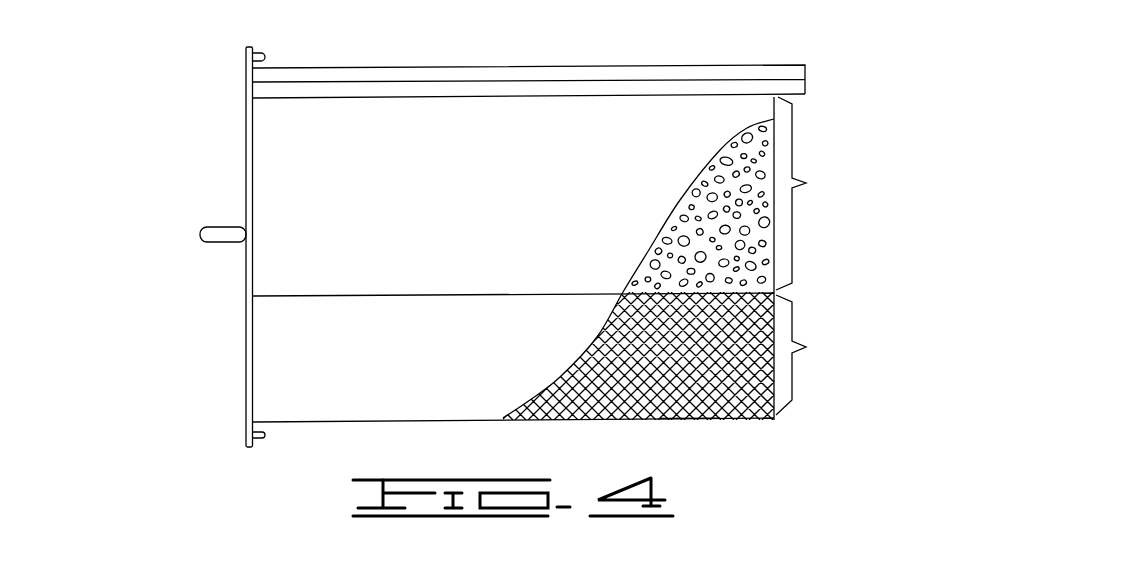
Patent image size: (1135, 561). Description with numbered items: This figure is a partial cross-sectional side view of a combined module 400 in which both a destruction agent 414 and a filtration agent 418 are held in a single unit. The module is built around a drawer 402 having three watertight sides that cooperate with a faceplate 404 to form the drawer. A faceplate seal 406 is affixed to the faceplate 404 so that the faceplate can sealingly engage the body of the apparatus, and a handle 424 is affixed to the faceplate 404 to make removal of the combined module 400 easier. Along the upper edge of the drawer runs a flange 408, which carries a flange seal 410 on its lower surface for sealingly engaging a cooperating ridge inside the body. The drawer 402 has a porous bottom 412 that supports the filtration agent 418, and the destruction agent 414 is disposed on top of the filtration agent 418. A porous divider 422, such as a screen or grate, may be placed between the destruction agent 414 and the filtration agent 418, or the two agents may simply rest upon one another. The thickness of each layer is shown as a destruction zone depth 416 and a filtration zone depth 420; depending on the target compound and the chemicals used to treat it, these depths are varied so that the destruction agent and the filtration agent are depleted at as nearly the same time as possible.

The combined module 400 is at (190, 132).
The drawer 402 is at (432, 208).
The faceplate 404 is at (245, 372).
The faceplate seal 406 is at (268, 436).
The flange 408 is at (775, 63).
The flange seal 410 is at (803, 95).
The porous bottom 412 is at (670, 418).
The destruction agent 414 is at (716, 168).
The destruction zone depth 416 is at (806, 183).
The filtration agent 418 is at (687, 402).
The filtration zone depth 420 is at (806, 347).
The porous divider 422 is at (293, 296).
The handle 424 is at (200, 232).